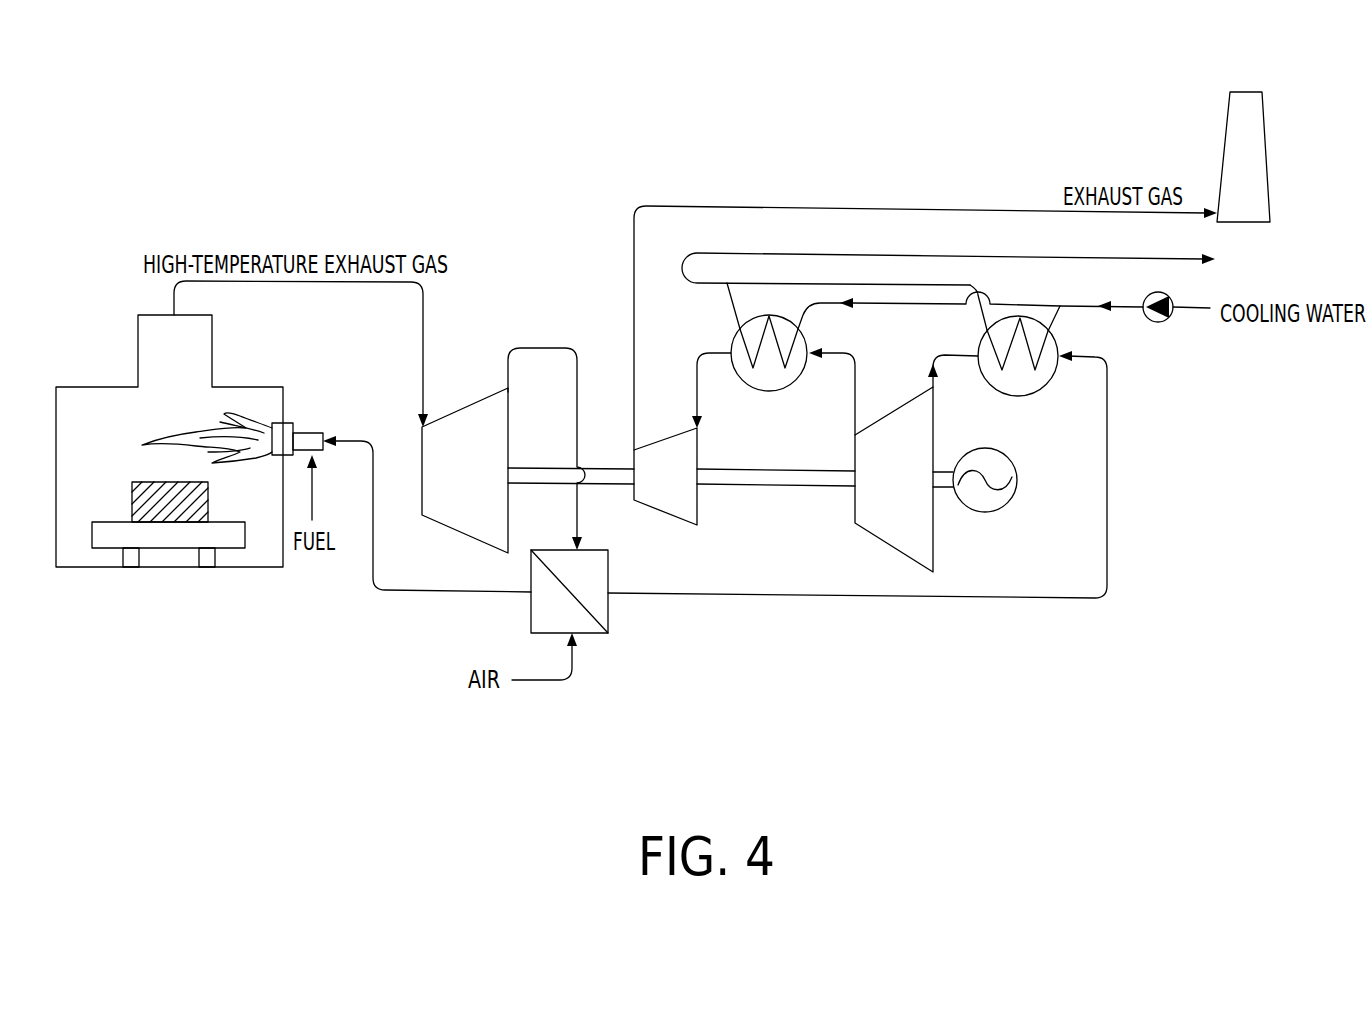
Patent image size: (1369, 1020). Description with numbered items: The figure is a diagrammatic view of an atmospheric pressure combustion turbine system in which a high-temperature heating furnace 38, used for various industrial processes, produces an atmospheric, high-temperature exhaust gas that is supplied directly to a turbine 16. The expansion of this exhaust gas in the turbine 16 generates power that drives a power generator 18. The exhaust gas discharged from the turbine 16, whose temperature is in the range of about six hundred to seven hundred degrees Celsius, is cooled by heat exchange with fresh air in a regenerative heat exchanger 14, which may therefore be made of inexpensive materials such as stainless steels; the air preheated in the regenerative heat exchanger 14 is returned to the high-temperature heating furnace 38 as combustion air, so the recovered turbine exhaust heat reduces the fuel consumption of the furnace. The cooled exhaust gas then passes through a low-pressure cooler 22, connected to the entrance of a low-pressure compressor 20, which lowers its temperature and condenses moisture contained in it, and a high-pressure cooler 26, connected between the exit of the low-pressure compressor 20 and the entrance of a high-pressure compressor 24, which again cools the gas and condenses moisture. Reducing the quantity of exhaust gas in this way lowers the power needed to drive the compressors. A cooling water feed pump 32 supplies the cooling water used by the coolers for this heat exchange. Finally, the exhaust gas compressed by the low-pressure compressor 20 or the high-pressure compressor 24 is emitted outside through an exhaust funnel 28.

The regenerative heat exchanger 14 is at (609, 620).
The turbine 16 is at (462, 408).
The power generator 18 is at (1007, 503).
The low-pressure compressor 20 is at (877, 537).
The low-pressure cooler 22 is at (1035, 392).
The high-pressure compressor 24 is at (665, 513).
The high-pressure cooler 26 is at (768, 391).
The exhaust funnel 28 is at (1224, 148).
The cooling water feed pump 32 is at (1157, 322).
The high-temperature heating furnace 38 is at (183, 567).